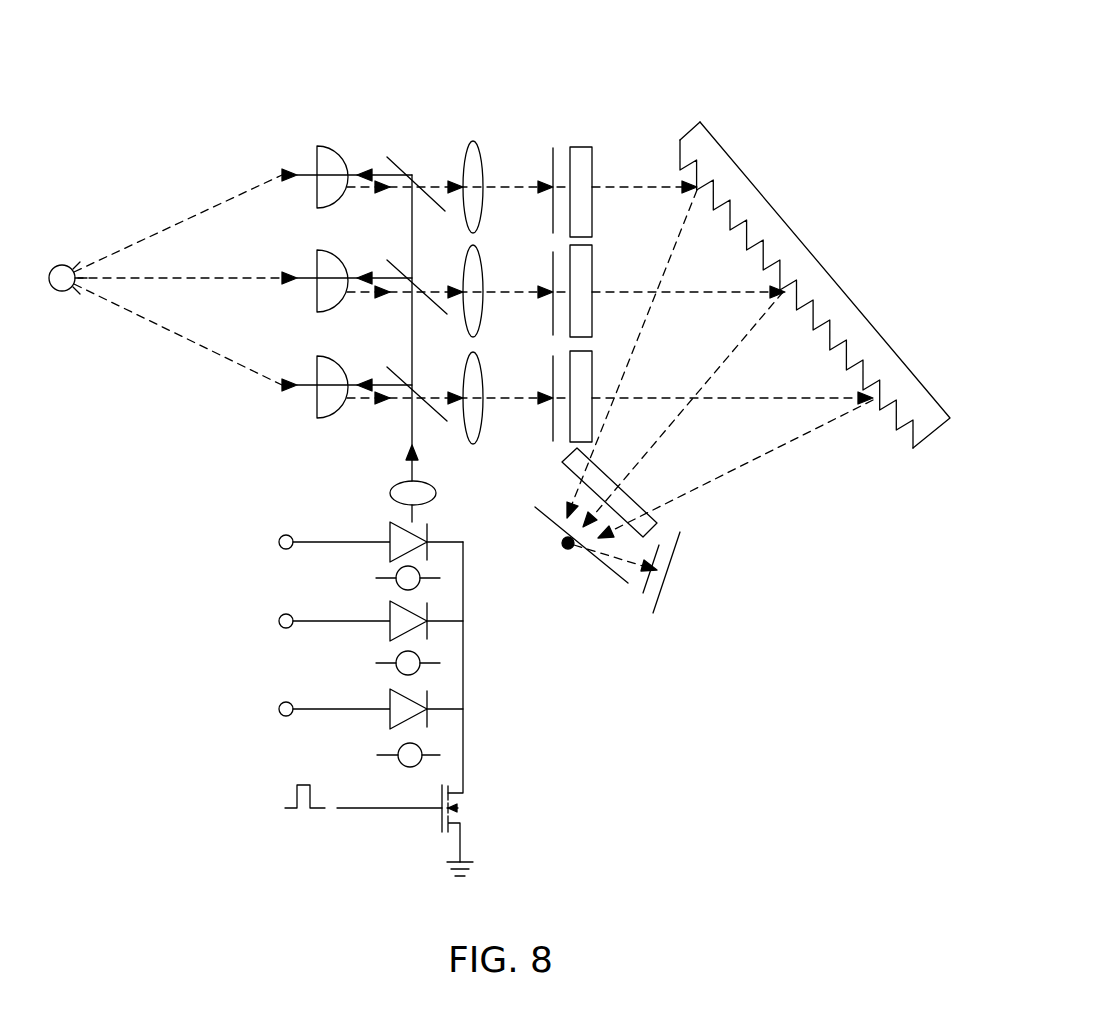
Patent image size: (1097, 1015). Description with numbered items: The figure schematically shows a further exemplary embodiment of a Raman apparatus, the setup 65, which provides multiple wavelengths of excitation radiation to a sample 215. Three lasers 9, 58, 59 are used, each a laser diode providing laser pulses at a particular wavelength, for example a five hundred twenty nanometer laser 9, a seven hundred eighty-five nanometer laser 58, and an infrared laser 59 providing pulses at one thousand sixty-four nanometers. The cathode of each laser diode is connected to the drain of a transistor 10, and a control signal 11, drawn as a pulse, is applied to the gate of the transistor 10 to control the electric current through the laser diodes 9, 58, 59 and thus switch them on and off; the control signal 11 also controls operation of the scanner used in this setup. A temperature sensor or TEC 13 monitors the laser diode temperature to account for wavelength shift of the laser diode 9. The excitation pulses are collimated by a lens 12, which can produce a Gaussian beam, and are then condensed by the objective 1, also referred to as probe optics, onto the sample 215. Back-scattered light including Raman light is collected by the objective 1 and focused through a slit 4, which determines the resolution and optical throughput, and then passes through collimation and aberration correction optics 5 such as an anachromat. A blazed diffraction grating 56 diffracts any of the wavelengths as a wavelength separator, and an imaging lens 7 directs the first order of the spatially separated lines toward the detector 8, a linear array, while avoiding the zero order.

The setup 65 is at (110, 52).
The blazed diffraction grating 56 is at (243, 128).
The sample 215 is at (63, 265).
The objective 1 is at (315, 368).
The slit 4 is at (553, 162).
The collimation and aberration correction optics 5 is at (582, 147).
The imaging lens 7 is at (566, 551).
The detector 8 is at (665, 590).
The lens 12 is at (437, 493).
The laser diode 9 is at (382, 541).
The temperature sensor or TEC 13 is at (394, 586).
The laser 58 is at (368, 621).
The infrared laser 59 is at (387, 711).
The transistor 10 is at (468, 823).
The control signal 11 is at (285, 808).